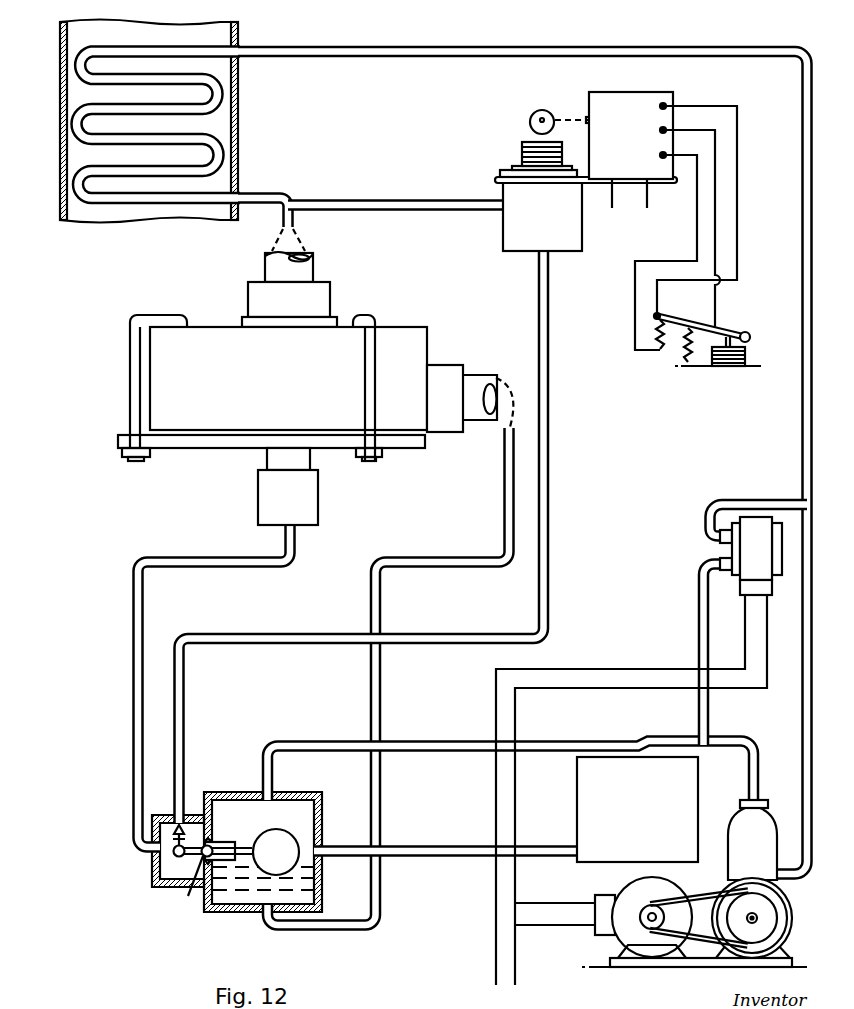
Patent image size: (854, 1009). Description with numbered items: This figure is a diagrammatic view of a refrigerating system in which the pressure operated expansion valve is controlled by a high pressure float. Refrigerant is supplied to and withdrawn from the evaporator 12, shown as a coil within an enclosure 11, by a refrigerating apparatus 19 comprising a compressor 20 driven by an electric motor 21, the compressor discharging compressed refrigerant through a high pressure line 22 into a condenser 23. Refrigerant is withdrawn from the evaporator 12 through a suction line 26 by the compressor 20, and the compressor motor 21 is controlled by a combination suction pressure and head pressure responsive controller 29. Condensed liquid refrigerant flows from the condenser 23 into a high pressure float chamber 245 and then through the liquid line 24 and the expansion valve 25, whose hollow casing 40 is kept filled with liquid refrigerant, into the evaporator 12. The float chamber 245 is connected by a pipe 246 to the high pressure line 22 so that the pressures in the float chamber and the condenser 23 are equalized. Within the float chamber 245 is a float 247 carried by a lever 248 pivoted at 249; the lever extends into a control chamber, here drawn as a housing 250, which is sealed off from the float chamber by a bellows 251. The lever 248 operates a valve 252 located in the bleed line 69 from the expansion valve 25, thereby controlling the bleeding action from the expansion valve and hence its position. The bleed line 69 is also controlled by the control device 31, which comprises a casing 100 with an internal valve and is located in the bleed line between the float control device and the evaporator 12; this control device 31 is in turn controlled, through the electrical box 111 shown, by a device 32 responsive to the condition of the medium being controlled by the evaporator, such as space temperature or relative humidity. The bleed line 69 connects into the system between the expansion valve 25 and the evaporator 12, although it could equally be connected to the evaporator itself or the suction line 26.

The wall of compartment 11 is at (60, 150).
The evaporator 12 is at (140, 204).
The refrigerating apparatus 19 is at (694, 857).
The compressor 20 is at (738, 848).
The electric motor 21 is at (633, 894).
The high pressure line 22 is at (754, 770).
The condenser 23 is at (642, 826).
The liquid line 24 is at (268, 205).
The expansion valve 25 is at (307, 388).
The suction line 26 is at (405, 58).
The combination suction pressure and head pressure responsive controller 29 is at (702, 551).
The control device 31 is at (593, 220).
The condition responsive device 32 is at (708, 377).
The hollow casing 40 is at (299, 389).
The bleed line 69 is at (341, 210).
The casing 100 is at (557, 226).
The control box 111 is at (642, 144).
The high pressure float chamber 245 is at (322, 818).
The pipe 246 is at (407, 748).
The float 247 is at (272, 845).
The lever 248 is at (246, 845).
The pivot 249 is at (182, 884).
The housing 250 is at (152, 876).
The bellows 251 is at (226, 832).
The valve 252 is at (172, 822).